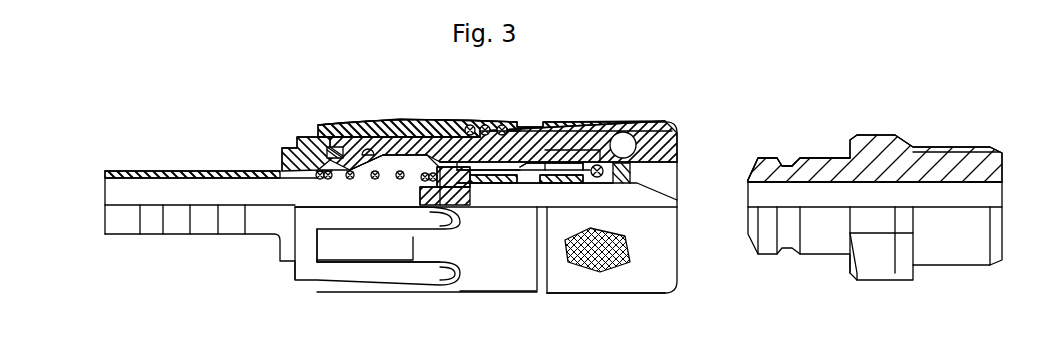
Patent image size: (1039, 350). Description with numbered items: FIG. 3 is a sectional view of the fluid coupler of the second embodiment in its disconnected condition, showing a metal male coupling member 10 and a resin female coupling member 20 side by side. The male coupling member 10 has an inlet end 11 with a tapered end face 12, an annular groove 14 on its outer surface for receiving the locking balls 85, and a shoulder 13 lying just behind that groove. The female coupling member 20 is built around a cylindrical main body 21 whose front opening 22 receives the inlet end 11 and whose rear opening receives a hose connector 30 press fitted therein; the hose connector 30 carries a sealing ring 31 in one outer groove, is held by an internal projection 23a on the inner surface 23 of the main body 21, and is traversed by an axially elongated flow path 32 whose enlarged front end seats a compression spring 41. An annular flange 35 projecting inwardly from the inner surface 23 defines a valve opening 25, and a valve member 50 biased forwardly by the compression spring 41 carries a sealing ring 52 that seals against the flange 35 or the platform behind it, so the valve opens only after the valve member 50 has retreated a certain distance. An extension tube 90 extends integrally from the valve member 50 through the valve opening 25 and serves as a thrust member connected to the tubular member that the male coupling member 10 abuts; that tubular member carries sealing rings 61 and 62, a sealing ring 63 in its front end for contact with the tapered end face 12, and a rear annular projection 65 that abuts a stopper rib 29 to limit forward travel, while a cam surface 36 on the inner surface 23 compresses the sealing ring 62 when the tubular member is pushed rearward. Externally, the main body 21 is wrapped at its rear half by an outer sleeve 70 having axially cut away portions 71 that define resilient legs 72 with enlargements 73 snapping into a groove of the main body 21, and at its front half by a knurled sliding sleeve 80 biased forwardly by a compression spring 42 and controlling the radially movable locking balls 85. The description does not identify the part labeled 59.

The flow path 32 is at (193, 193).
The hose connector 30 is at (180, 227).
The female coupling member 20 is at (297, 287).
The front opening 22 is at (662, 177).
The inner surface 23 is at (388, 152).
The locking balls 85 is at (623, 140).
The sealing ring 31 is at (333, 150).
The internal projection 23a is at (352, 150).
The main body 21 is at (367, 147).
The enlargement 73 is at (402, 137).
The outer sleeve 70 is at (412, 123).
The sealing ring 52 is at (453, 168).
The annular flange 35 is at (473, 128).
The compression spring 42 is at (489, 127).
The stopper rib 29 is at (530, 165).
The cam surface 36 is at (567, 158).
The sealing ring 62 is at (595, 165).
The sealing ring 63 is at (633, 178).
The compression spring 41 is at (350, 178).
The resilient legs 72 is at (357, 250).
The cut away portions 71 is at (404, 275).
The valve member 50 is at (430, 207).
The valve opening 25 is at (473, 172).
The seal ring 59 is at (490, 182).
The extension tube 90 is at (508, 183).
The annular projection 65 is at (528, 174).
The sealing ring 61 is at (567, 183).
The sliding sleeve 80 is at (637, 273).
The male coupling member 10 is at (915, 282).
The tapered end face 12 is at (752, 173).
The shoulder 13 is at (768, 160).
The annular groove 14 is at (790, 165).
The inlet end 11 is at (755, 200).